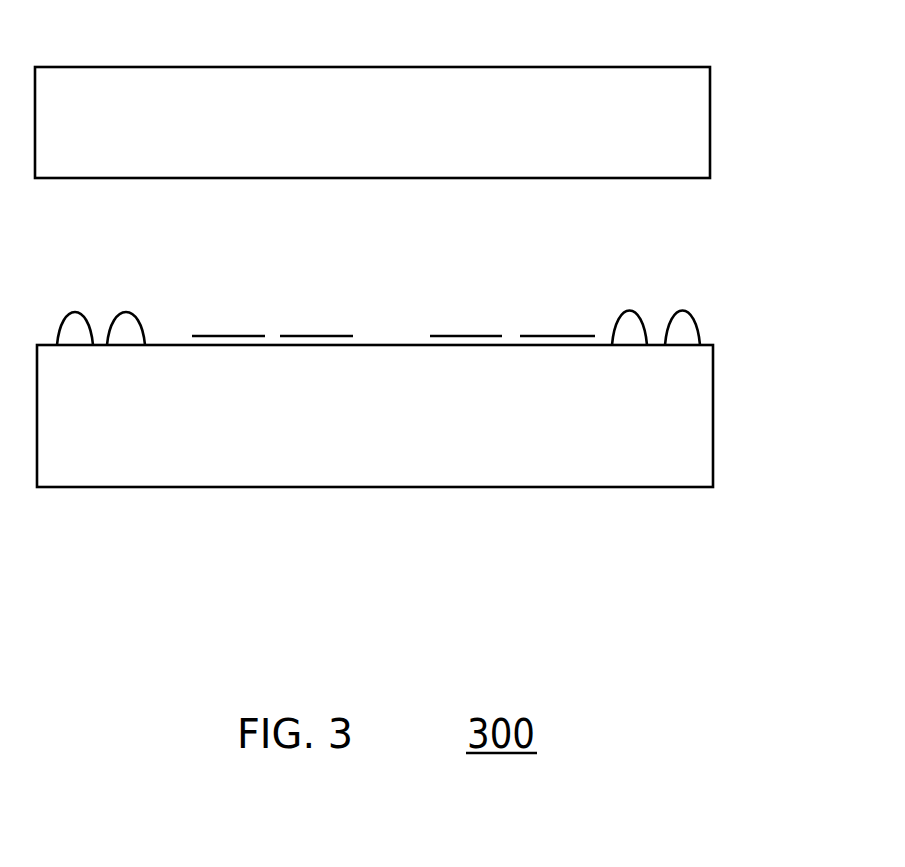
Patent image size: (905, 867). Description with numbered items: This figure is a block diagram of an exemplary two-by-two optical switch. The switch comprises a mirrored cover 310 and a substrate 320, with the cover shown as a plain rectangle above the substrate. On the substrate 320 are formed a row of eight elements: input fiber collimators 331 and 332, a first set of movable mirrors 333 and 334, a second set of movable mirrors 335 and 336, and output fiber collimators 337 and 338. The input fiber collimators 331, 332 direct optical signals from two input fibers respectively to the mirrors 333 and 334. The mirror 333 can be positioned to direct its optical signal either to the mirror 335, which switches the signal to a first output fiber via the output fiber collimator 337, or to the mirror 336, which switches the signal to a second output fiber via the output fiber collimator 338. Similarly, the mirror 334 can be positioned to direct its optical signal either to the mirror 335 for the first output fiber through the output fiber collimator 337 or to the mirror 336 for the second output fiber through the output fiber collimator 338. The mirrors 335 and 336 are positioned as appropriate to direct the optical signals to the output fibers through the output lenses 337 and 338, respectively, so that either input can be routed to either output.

The mirrored cover 310 is at (720, 112).
The substrate 320 is at (727, 407).
The input fiber collimator 331 is at (75, 375).
The input fiber collimator 332 is at (137, 365).
The movable mirror 333 is at (236, 365).
The movable mirror 334 is at (314, 372).
The movable mirror 335 is at (482, 363).
The movable mirror 336 is at (558, 368).
The output fiber collimator 337 is at (627, 368).
The output fiber collimator 338 is at (687, 367).